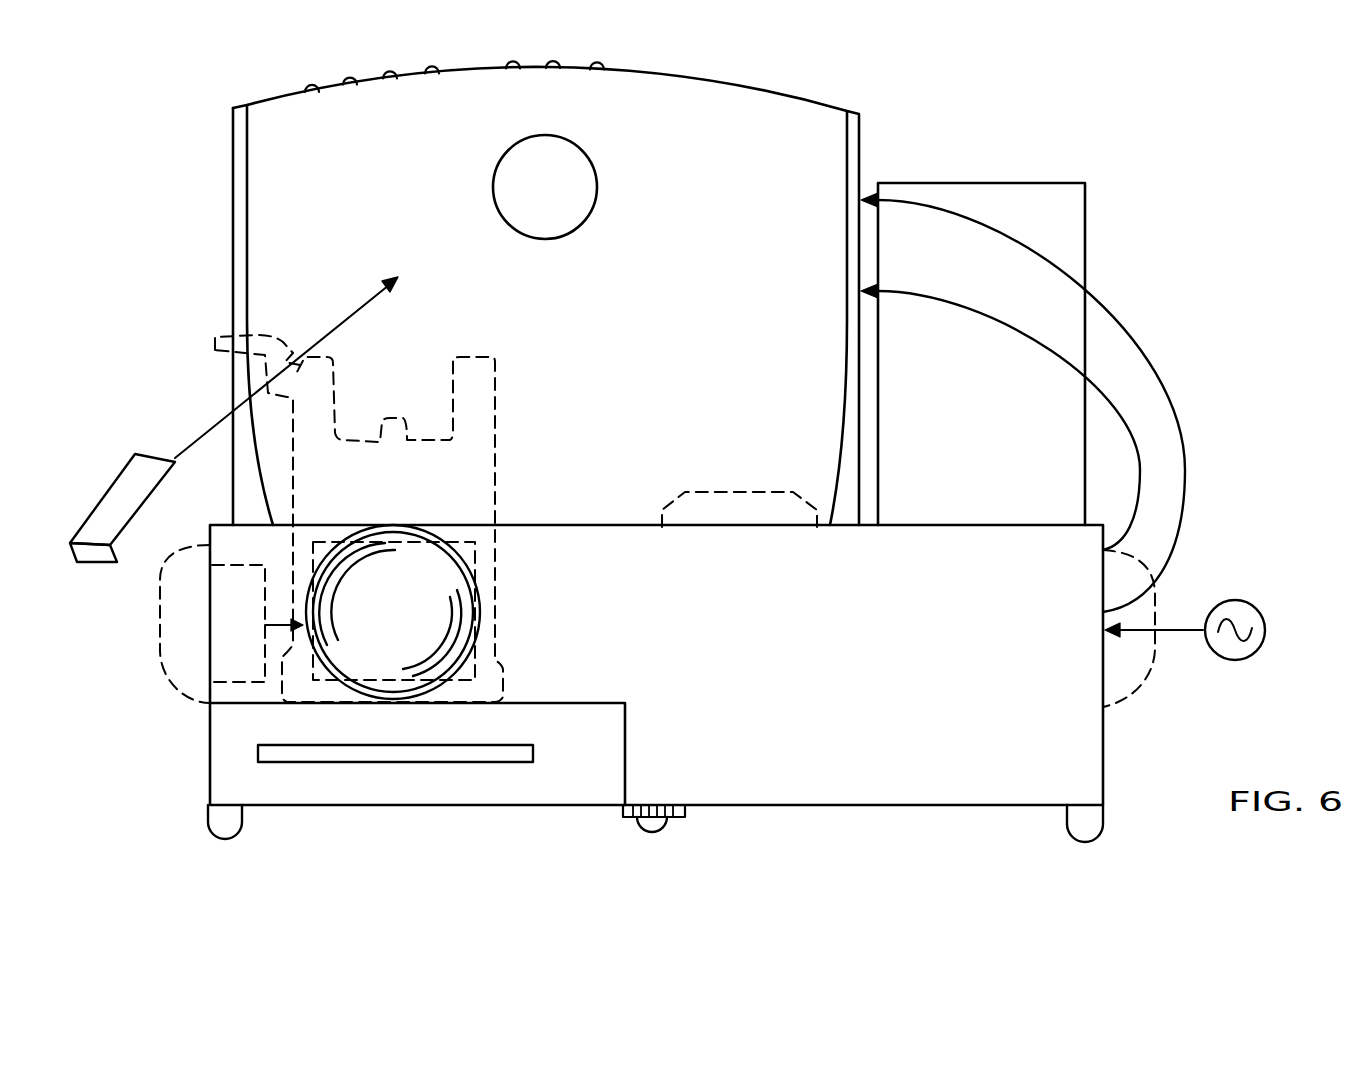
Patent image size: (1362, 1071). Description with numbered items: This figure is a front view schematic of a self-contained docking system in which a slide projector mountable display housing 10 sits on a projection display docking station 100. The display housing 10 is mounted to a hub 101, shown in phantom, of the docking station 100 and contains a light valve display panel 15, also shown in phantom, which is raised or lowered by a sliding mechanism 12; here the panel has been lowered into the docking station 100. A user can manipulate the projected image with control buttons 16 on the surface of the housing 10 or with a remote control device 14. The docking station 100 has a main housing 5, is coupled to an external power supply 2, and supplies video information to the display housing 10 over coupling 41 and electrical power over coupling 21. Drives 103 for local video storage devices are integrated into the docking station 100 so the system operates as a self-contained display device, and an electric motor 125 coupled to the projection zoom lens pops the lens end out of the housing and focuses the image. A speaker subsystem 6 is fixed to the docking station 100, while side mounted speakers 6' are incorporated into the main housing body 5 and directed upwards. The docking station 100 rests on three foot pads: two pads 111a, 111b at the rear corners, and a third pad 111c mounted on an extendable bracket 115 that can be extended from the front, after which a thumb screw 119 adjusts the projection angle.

The display housing 10 is at (210, 105).
The control buttons 16 is at (608, 60).
The remote control device 14 is at (117, 498).
The sliding mechanism 12 is at (216, 341).
The hub 101 is at (737, 490).
The speaker subsystem 6 is at (1004, 313).
The coupling 21 is at (1182, 442).
The coupling 41 is at (1135, 446).
The main housing 5 is at (795, 648).
The drives 103 is at (600, 749).
The light valve display panel 15 is at (467, 553).
The electric motor 125 is at (258, 608).
The side mounted speakers 6' is at (660, 628).
The external power supply 2 is at (1250, 607).
The docking station 100 is at (182, 755).
The foot pad 111a is at (233, 822).
The foot pad 111b is at (1067, 824).
The third foot pad 111c is at (655, 823).
The extendable bracket 115 is at (677, 812).
The thumb screw 119 is at (638, 818).